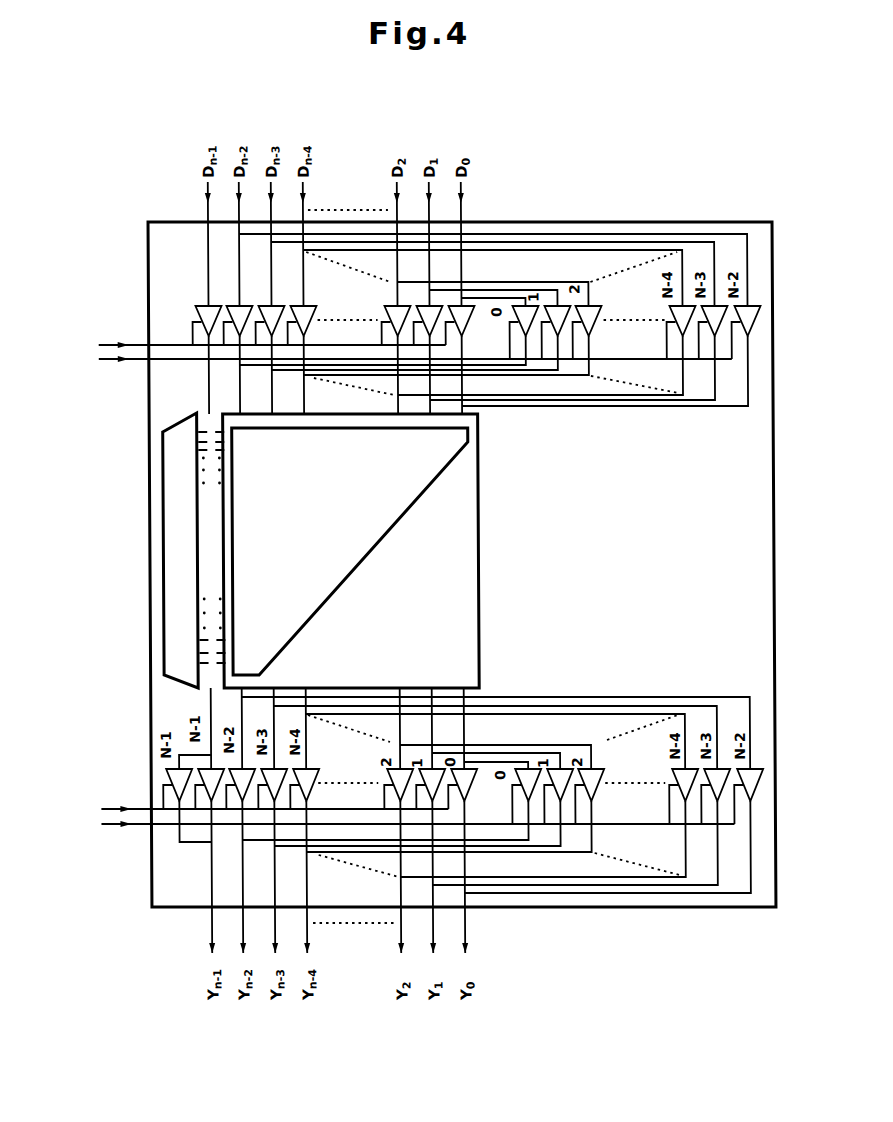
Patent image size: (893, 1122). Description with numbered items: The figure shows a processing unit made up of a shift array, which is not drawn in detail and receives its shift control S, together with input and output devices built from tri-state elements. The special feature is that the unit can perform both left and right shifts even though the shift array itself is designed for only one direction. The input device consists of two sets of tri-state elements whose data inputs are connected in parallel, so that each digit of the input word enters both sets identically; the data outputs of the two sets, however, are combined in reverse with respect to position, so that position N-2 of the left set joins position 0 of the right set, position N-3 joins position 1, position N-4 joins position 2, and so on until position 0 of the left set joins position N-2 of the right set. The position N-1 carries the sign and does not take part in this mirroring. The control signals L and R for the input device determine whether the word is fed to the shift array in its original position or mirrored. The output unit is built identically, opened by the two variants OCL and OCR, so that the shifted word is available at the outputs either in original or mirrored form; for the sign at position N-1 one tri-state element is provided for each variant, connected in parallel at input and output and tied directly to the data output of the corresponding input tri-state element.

The sign position N-1 is at (204, 301).
The position N−2 N-2 is at (236, 301).
The position N−3 N-3 is at (268, 301).
The position N−4 N-4 is at (300, 301).
The position 2 is at (394, 311).
The position 1 is at (424, 313).
The position 0 is at (456, 314).
The control signal L̄ L is at (100, 316).
The control signal R̄ R is at (100, 367).
The output control signal OCL̄ OCL is at (105, 778).
The output control signal OCR̄ OCR is at (105, 830).
The shift control input S is at (150, 547).